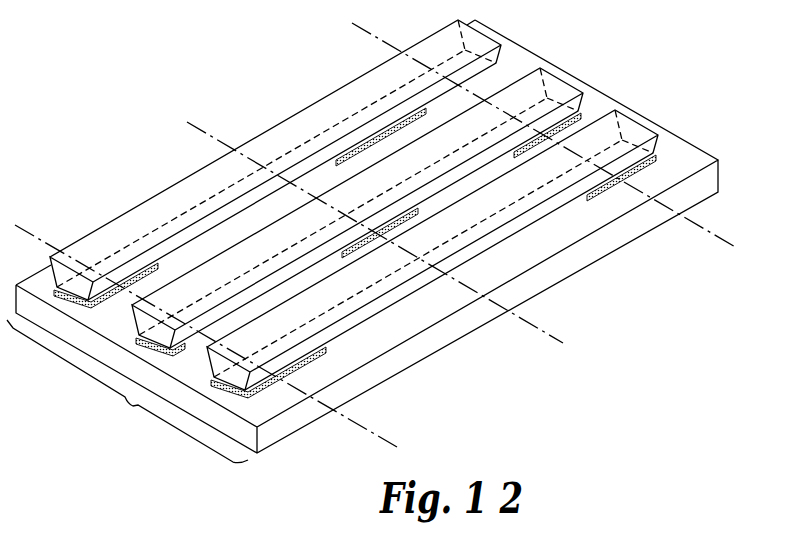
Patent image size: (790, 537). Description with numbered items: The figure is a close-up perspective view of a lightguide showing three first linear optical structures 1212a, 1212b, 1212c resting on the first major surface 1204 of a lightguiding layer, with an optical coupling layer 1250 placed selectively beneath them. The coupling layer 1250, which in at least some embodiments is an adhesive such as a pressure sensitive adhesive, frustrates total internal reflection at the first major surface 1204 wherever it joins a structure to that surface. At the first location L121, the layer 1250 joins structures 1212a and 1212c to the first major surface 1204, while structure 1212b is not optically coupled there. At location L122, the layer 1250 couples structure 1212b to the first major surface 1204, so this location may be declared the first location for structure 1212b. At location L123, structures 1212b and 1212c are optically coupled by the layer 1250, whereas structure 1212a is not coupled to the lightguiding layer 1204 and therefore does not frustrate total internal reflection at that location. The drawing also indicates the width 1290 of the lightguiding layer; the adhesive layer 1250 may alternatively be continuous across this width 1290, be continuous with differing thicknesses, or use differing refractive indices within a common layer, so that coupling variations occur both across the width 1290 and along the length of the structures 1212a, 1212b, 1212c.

The first major surface 1204 is at (438, 305).
The first linear optical structure 1212a is at (112, 232).
The first linear optical structure 1212b is at (560, 88).
The first linear optical structure 1212c is at (635, 135).
The optical coupling layer 1250 is at (372, 132).
The width of the lightguiding layer 1290 is at (127, 391).
The first location L121 is at (390, 447).
The location L122 is at (563, 345).
The location L123 is at (722, 238).